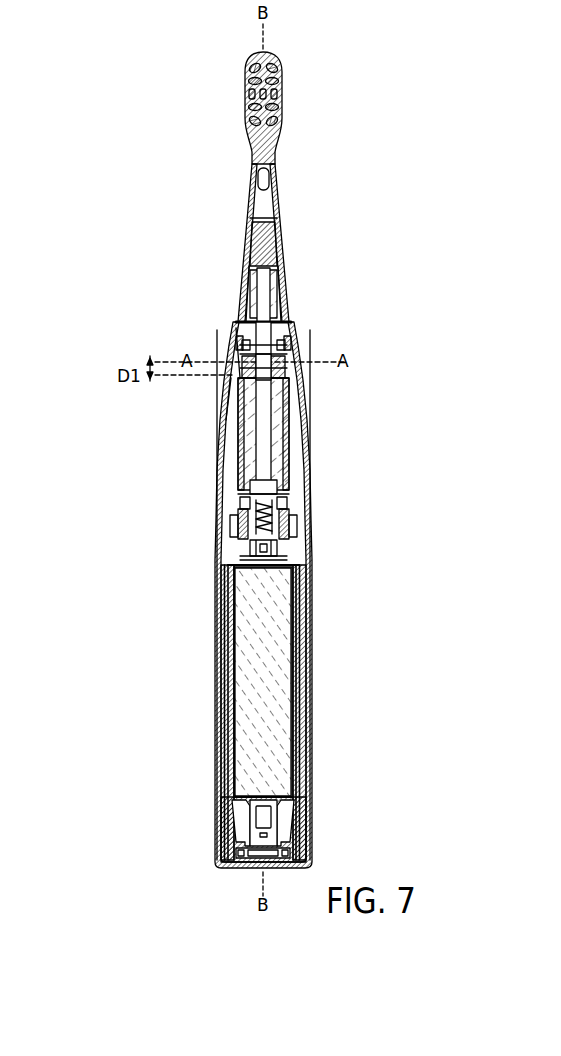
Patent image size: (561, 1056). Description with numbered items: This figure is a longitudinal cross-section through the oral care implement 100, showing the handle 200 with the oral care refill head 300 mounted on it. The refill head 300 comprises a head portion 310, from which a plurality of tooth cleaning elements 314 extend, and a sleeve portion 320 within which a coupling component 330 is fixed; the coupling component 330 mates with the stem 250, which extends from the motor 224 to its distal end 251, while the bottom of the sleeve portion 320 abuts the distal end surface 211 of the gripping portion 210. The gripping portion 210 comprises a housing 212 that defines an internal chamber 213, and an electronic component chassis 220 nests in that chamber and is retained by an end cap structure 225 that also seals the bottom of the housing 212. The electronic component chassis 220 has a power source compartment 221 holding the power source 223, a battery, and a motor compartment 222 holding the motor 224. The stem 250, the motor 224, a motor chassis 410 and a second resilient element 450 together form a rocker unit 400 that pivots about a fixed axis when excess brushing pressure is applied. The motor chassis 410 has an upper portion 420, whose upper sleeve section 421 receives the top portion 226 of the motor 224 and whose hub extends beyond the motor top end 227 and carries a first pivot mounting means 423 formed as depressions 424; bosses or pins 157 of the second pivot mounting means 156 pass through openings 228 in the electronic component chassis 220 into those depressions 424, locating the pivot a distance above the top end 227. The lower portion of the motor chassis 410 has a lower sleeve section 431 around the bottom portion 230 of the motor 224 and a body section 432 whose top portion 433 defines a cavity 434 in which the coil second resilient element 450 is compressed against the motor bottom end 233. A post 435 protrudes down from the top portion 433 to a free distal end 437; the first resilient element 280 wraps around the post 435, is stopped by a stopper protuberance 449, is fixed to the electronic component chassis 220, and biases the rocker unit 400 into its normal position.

The oral care implement 100 is at (88, 160).
The oral care refill head 300 is at (228, 190).
The handle 200 is at (126, 666).
The head portion 310 is at (294, 92).
The tooth cleaning elements 314 is at (256, 80).
The sleeve portion 320 is at (284, 216).
The coupling component 330 is at (266, 244).
The distal end 251 is at (268, 282).
The stem 250 is at (266, 300).
The distal end surface 211 is at (292, 326).
The bosses or pins 157 is at (292, 360).
The openings 228 is at (300, 368).
The upper portion 420 is at (300, 377).
The top end 227 is at (300, 394).
The top portion 226 is at (300, 400).
The motor 224 is at (300, 428).
The bottom portion 230 is at (302, 468).
The bottom end 233 is at (302, 505).
The second resilient element 450 is at (302, 508).
The top portion 433 is at (304, 525).
The stopper protuberance 449 is at (304, 545).
The first resilient element 280 is at (306, 566).
The free distal end 437 is at (308, 591).
The gripping portion 210 is at (308, 622).
The housing 212 is at (300, 692).
The internal chamber 213 is at (306, 720).
The end cap structure 225 is at (312, 852).
The first pivot mounting means 423 is at (243, 360).
The second pivot mounting means 156 is at (244, 356).
The depressions or blind holes 424 is at (232, 372).
The upper sleeve section 421 is at (228, 402).
The rocker unit 400 is at (224, 414).
The motor compartment 222 is at (232, 470).
The cavity 434 is at (229, 490).
The lower sleeve section 431 is at (234, 499).
The motor chassis 410 is at (236, 522).
The body section 432 is at (232, 548).
The post 435 is at (240, 574).
The electronic component chassis 220 is at (226, 728).
The power source compartment 221 is at (236, 747).
The power source 223 is at (268, 766).